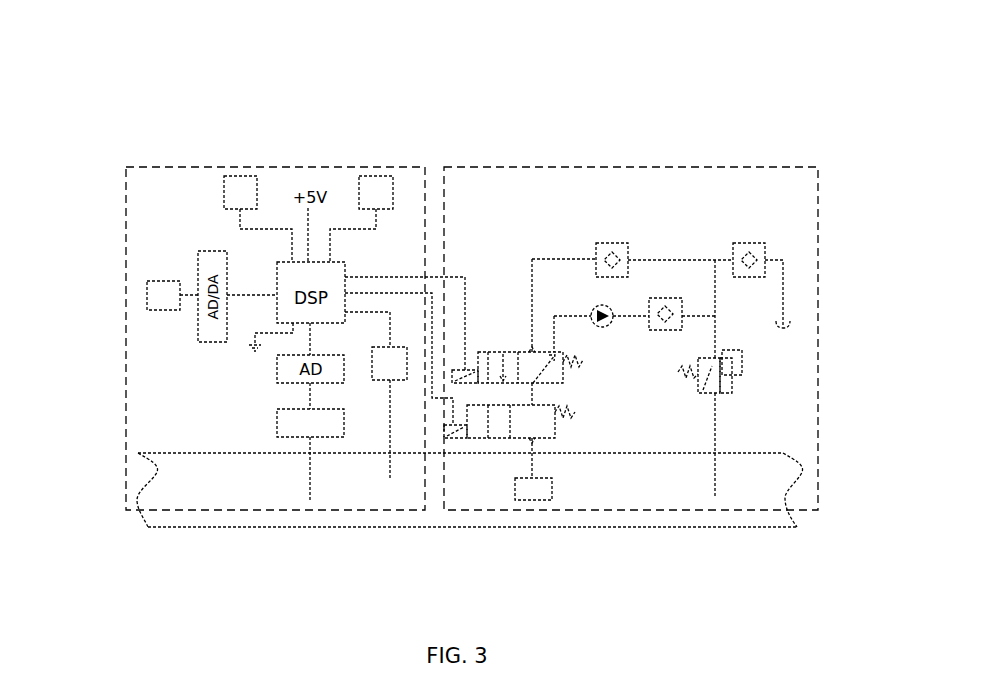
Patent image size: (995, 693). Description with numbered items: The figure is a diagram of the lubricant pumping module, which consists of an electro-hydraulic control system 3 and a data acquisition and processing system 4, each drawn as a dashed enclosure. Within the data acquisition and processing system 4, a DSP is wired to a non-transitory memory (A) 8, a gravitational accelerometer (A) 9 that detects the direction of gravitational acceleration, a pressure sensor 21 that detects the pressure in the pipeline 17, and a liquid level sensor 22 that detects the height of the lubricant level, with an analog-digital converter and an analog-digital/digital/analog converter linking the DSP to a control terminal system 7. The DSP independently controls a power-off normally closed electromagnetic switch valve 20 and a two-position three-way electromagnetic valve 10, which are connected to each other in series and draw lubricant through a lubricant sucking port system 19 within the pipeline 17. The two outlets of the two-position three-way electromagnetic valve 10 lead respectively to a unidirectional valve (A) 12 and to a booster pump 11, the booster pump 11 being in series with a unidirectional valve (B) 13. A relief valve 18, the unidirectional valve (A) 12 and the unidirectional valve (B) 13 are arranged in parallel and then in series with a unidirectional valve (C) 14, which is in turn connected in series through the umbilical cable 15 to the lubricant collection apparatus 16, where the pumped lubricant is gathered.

The electro-hydraulic control system 3 is at (820, 480).
The data acquisition and processing system 4 is at (125, 447).
The control terminal system 7 is at (170, 295).
The non-transitory memory (A) 8 is at (240, 192).
The gravitational accelerometer (A) 9 is at (375, 192).
The two-position three-way electromagnetic valve 10 is at (503, 365).
The booster pump 11 is at (596, 310).
The unidirectional valve (A) 12 is at (613, 247).
The unidirectional valve (B) 13 is at (675, 308).
The unidirectional valve (C) 14 is at (758, 255).
The umbilical cable 15 is at (782, 257).
The lubricant collection apparatus 16 is at (785, 322).
The pipeline 17 is at (760, 477).
The relief valve 18 is at (710, 382).
The lubricant sucking port system 19 is at (533, 497).
The power-off normally closed electromagnetic switch valve 20 is at (478, 422).
The pressure sensor 21 is at (387, 367).
The liquid level sensor 22 is at (302, 424).